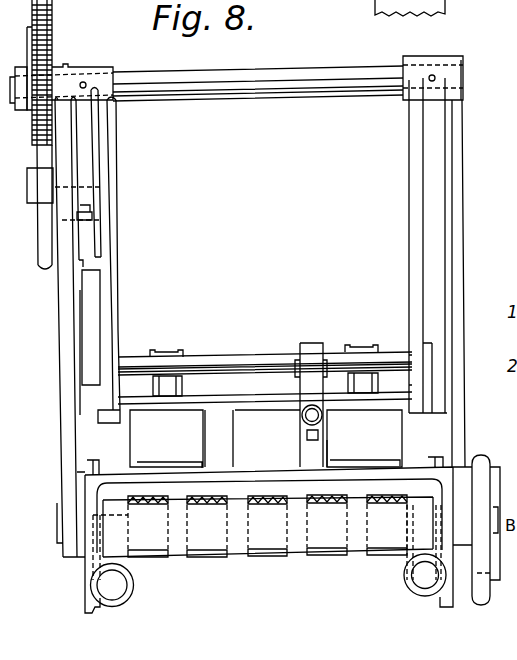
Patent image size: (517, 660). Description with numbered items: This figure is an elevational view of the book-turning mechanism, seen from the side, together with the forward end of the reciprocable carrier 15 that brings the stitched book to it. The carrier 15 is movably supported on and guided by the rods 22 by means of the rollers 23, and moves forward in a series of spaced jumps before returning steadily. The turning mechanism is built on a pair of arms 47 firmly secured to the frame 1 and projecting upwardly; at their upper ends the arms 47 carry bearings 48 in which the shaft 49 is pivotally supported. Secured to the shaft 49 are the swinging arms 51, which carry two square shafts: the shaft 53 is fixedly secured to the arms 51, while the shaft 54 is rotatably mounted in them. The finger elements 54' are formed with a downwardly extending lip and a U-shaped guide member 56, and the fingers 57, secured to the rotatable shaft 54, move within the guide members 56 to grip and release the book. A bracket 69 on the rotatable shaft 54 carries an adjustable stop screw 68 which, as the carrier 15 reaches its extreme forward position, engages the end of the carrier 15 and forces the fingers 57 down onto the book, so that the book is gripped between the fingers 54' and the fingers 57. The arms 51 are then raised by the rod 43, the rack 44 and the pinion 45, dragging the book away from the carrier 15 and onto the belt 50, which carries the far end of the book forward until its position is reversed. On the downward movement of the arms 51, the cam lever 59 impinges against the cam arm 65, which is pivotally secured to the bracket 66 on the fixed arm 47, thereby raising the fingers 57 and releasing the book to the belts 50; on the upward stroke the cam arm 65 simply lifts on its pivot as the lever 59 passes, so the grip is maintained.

The frame 1 is at (92, 482).
The reciprocable carrier member 15 is at (317, 450).
The rods 22 is at (113, 587).
The rollers 23 is at (118, 563).
The rod 43 is at (45, 237).
The rack 44 is at (43, 153).
The pinion 45 is at (52, 46).
The arms 47 is at (68, 337).
The bearings 48 is at (66, 68).
The shaft 49 is at (327, 48).
The belt 50 is at (248, 507).
The arms 51 is at (105, 238).
The square shaft 53 is at (253, 402).
The square shaft 54 is at (265, 353).
The finger elements 54' is at (266, 432).
The U-shaped guide member 56 is at (183, 388).
The finger elements 57 is at (168, 353).
The cam lever 59 is at (88, 292).
The cam arm 65 is at (85, 140).
The bracket 66 is at (78, 230).
The adjustable stop screw 68 is at (308, 437).
The bracket 69 is at (313, 319).